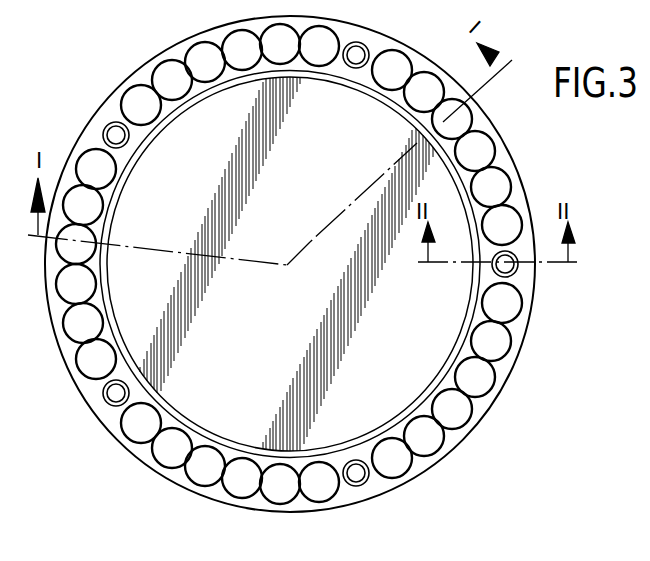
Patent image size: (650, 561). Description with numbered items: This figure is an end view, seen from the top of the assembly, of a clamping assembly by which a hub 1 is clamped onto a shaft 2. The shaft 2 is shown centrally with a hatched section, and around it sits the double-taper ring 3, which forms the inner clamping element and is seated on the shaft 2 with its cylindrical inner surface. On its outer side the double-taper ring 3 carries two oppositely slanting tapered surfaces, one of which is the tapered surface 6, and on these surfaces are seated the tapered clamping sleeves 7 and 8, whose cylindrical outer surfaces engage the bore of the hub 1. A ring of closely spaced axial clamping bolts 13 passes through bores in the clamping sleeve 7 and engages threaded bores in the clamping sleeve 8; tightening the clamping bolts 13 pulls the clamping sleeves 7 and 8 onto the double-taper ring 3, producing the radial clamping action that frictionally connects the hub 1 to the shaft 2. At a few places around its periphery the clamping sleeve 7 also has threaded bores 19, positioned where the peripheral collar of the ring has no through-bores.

The hub 1 is at (46, 7).
The shaft 2 is at (222, 163).
The double-taper ring 3 is at (336, 77).
The tapered surface 6 is at (446, 7).
The clamping sleeve 7 is at (502, 367).
The clamping sleeve 8 is at (99, 6).
The clamping bolts 13 is at (497, 185).
The threaded bores 19 is at (114, 133).